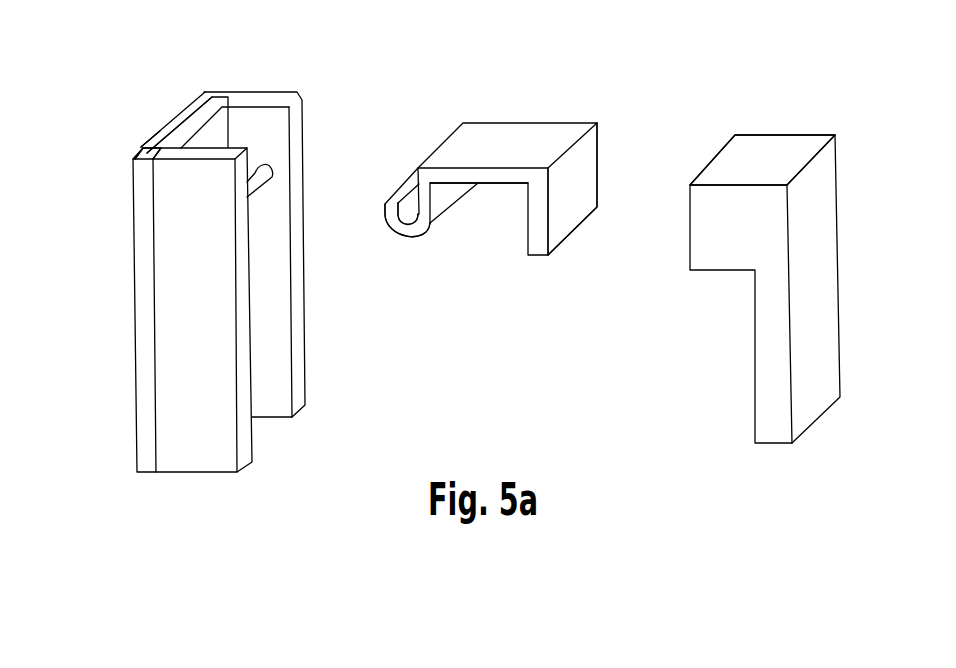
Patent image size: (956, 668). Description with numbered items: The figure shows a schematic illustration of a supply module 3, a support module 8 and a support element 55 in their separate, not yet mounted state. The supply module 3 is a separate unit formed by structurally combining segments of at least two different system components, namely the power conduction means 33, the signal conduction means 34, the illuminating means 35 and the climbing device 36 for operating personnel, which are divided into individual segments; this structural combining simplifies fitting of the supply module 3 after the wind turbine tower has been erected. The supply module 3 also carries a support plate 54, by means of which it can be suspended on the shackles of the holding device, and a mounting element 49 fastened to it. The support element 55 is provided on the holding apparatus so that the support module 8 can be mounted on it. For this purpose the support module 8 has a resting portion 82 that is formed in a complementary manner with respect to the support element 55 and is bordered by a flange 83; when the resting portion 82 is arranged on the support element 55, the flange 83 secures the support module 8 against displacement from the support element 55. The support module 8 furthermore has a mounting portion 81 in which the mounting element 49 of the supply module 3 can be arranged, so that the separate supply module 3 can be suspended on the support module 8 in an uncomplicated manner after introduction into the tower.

The supply module 3 is at (181, 394).
The support module 8 is at (498, 138).
The power conduction means 33 is at (204, 94).
The signal conduction means 34 is at (136, 154).
The illuminating means 35 is at (146, 148).
The climbing device 36 is at (176, 123).
The mounting element 49 is at (266, 177).
The support plate 54 is at (768, 415).
The support element 55 is at (763, 153).
The mounting portion 81 is at (403, 236).
The resting portion 82 is at (497, 187).
The flange 83 is at (575, 205).